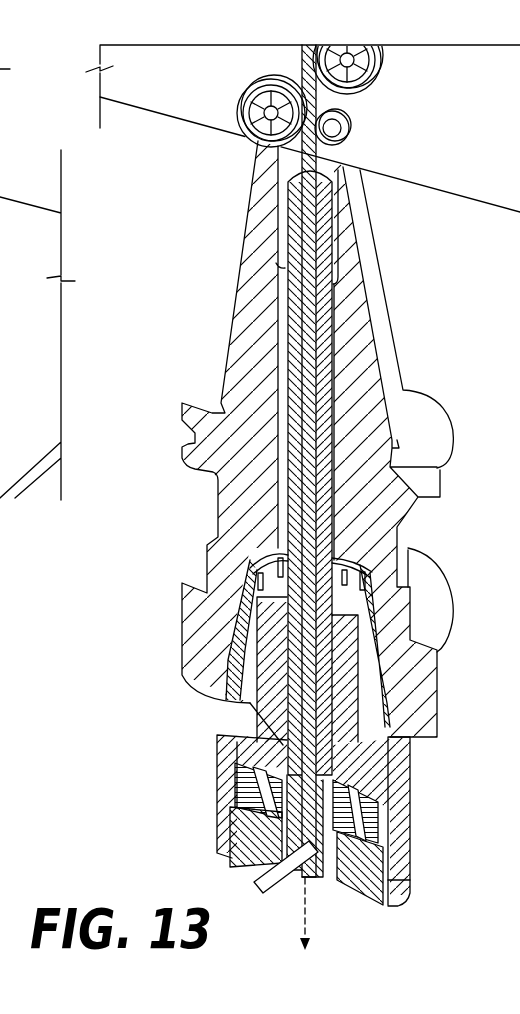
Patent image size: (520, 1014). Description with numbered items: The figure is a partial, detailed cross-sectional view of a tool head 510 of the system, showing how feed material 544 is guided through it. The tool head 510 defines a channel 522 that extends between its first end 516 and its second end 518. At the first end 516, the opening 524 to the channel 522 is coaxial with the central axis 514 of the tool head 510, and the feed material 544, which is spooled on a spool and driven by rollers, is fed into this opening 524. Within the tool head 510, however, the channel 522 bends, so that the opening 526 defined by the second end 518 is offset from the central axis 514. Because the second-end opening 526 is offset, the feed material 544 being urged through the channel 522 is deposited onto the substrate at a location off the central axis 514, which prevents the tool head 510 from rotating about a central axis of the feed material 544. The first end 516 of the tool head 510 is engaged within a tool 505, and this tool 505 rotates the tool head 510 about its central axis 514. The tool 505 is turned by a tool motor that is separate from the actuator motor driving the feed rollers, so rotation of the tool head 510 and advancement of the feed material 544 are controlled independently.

The tool 505 is at (230, 748).
The tool head 510 is at (350, 864).
The central axis 514 is at (310, 925).
The first end 516 is at (285, 745).
The second end 518 is at (362, 902).
The channel 522 is at (340, 818).
The opening 524 is at (324, 778).
The opening 526 is at (269, 882).
The feed material 544 is at (312, 509).